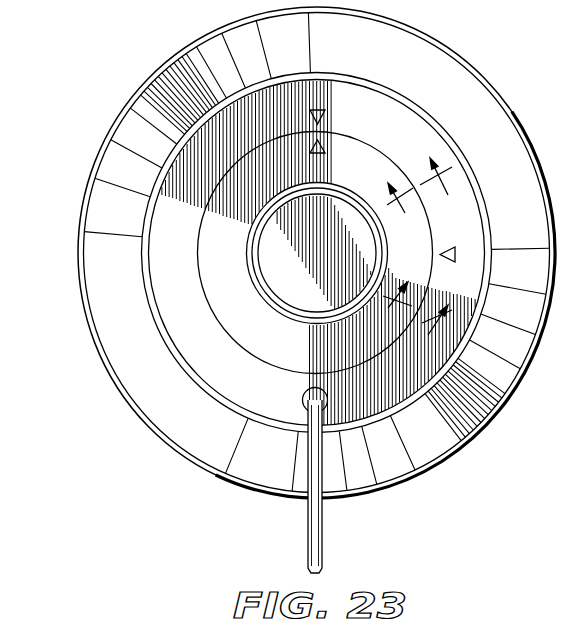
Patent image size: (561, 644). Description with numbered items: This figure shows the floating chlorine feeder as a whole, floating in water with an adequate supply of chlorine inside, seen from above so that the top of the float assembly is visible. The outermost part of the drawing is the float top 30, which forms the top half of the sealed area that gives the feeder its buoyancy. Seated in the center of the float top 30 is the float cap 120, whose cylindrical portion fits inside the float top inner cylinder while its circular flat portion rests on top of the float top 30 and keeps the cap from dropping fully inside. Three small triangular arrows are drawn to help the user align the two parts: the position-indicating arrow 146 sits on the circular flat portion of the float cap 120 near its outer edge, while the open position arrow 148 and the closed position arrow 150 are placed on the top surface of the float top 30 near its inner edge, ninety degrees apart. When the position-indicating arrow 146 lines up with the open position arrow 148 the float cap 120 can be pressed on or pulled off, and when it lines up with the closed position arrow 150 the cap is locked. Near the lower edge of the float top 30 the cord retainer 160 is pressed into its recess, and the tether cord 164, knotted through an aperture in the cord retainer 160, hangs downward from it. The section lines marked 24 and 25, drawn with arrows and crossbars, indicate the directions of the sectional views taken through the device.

The float top 30 is at (92, 263).
The float cap 120 is at (252, 326).
The position-indicating arrow 146 is at (326, 148).
The open position arrow 148 is at (454, 258).
The closed position arrow 150 is at (309, 114).
The section line 24- 24 is at (423, 197).
The section line 25- 25 is at (411, 319).
The cord retainer 160 is at (328, 399).
The tether cord 164 is at (323, 536).